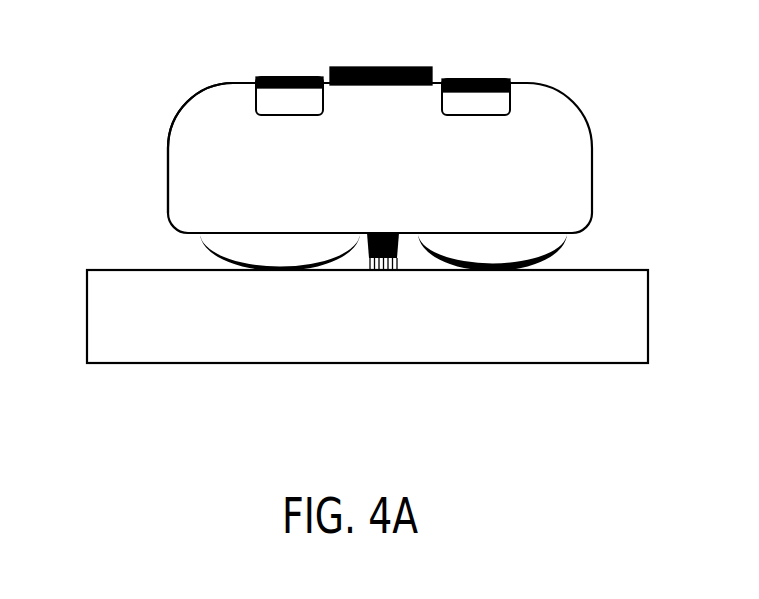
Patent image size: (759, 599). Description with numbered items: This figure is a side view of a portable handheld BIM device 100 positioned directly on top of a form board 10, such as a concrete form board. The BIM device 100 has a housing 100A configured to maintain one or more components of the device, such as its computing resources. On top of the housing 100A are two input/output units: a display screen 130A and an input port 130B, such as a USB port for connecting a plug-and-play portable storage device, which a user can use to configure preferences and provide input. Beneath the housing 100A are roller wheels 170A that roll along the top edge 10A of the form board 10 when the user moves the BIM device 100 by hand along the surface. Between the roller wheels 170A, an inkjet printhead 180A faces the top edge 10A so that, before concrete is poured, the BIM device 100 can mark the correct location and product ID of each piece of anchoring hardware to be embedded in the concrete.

The BIM device 100 is at (472, 193).
The housing 100A is at (170, 131).
The form board 10 is at (467, 337).
The top edge 10A is at (145, 269).
The display screen 130A is at (407, 67).
The input port 130B is at (500, 79).
The roller wheels 170A is at (558, 240).
The inkjet printhead 180A is at (399, 254).